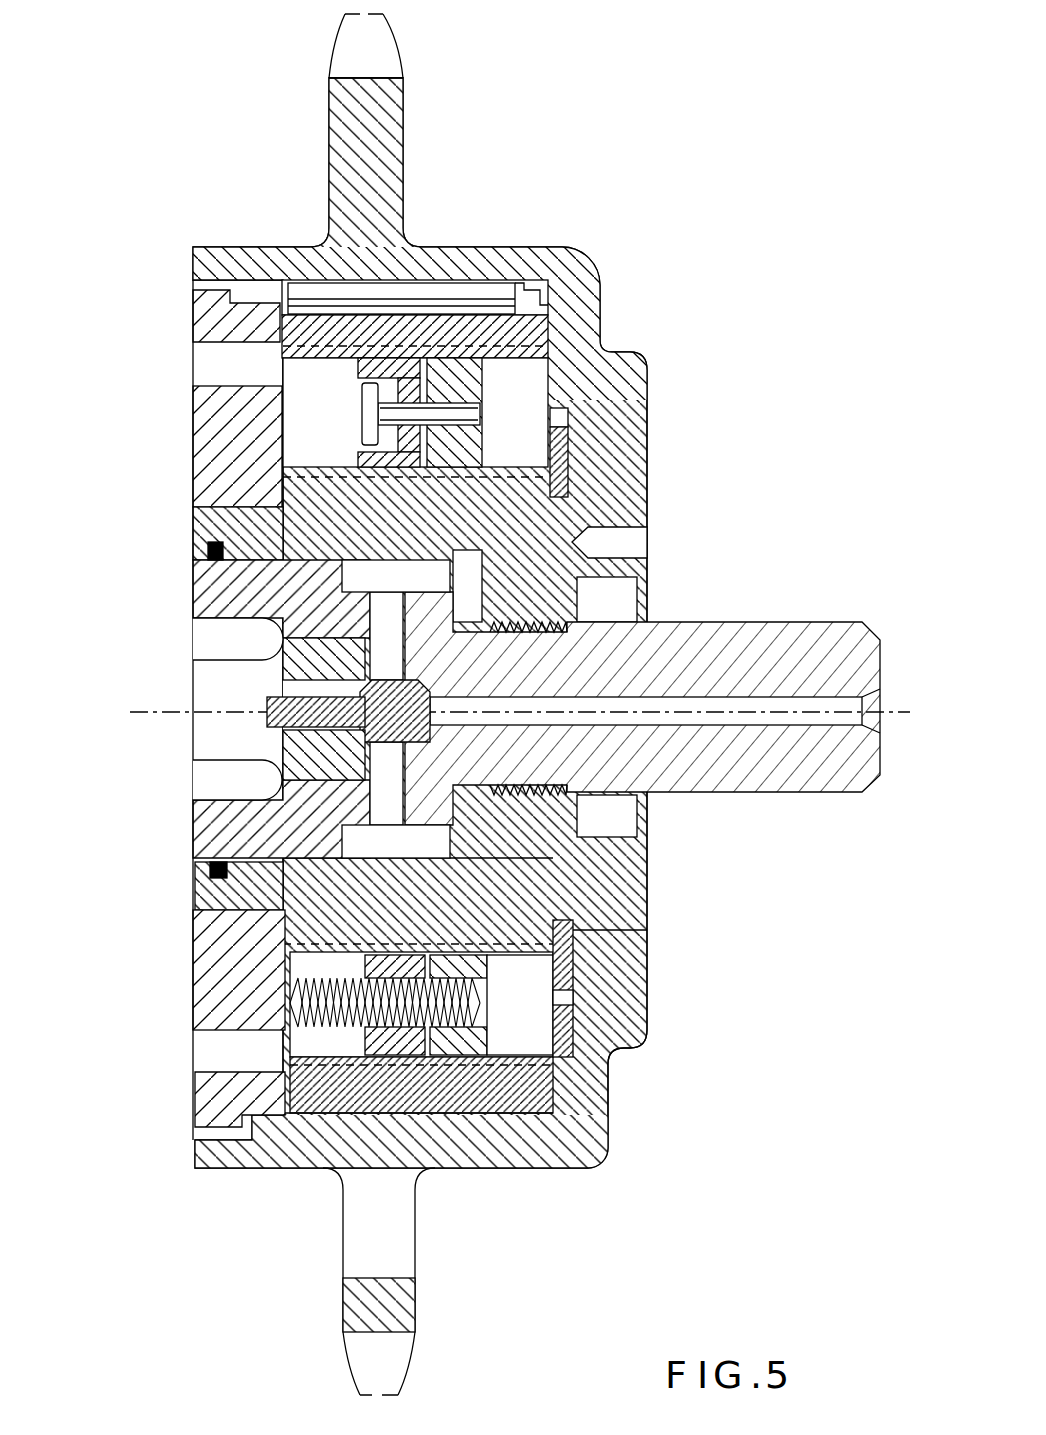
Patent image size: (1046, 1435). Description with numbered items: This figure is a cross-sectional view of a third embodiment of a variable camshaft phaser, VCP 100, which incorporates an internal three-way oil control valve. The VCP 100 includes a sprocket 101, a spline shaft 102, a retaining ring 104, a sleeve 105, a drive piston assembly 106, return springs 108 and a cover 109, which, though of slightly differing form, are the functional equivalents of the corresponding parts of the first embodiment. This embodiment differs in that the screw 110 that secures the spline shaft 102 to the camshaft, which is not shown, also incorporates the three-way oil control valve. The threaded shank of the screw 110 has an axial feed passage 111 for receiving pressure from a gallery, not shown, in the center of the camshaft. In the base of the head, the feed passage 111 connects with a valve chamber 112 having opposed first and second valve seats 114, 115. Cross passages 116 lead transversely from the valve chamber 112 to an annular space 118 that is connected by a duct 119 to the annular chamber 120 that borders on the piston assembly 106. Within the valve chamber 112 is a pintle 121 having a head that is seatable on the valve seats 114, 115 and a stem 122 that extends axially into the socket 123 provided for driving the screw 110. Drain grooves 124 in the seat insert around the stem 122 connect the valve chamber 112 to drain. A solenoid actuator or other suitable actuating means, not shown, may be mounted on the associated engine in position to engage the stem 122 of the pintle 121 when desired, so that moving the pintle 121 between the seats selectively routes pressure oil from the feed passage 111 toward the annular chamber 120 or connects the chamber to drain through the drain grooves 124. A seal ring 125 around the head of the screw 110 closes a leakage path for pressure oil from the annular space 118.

The VCP 100 is at (530, 238).
The sprocket 101 is at (380, 232).
The spline shaft 102 is at (637, 872).
The retaining ring 104 is at (560, 465).
The sleeve 105 is at (535, 1082).
The drive piston assembly 106 is at (522, 424).
The return springs 108 is at (292, 1005).
The cover 109 is at (222, 1096).
The screw 110 is at (188, 850).
The axial feed passage 111 is at (795, 696).
The valve chamber 112 is at (362, 685).
The first valve seat 114 is at (440, 694).
The second valve seat 115 is at (330, 740).
The cross passages 116 is at (375, 615).
The annular space 118 is at (362, 580).
The duct 119 is at (540, 900).
The annular chamber 120 is at (525, 1021).
The pintle 121 is at (412, 728).
The stem 122 is at (340, 733).
The socket 123 is at (213, 693).
The drain grooves 124 is at (215, 867).
The seal ring 125 is at (196, 556).